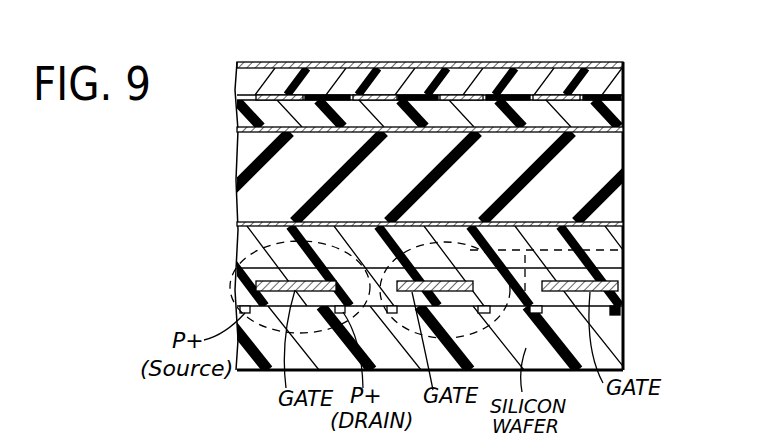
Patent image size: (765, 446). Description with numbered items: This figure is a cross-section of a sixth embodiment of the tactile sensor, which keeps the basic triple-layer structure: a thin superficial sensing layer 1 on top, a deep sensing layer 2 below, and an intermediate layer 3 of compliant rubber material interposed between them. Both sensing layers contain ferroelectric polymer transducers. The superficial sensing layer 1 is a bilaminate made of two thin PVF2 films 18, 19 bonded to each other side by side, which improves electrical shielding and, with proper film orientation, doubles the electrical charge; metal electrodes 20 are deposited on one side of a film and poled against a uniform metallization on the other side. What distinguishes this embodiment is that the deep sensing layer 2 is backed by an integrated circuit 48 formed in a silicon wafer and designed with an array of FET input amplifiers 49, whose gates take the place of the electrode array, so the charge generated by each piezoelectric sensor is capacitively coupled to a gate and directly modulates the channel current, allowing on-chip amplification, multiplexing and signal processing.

The superficial sensing layer 1 is at (640, 95).
The deep sensing layer 2 is at (612, 236).
The intermediate layer 3 is at (612, 155).
The PVF2 film 18 is at (487, 80).
The PVF2 film 19 is at (614, 110).
The metal electrodes 20 is at (353, 94).
The integrated circuit 48 is at (634, 328).
The FET input amplifiers 49 is at (273, 240).